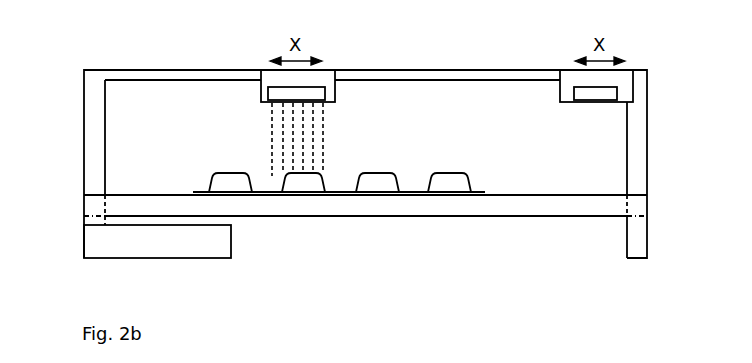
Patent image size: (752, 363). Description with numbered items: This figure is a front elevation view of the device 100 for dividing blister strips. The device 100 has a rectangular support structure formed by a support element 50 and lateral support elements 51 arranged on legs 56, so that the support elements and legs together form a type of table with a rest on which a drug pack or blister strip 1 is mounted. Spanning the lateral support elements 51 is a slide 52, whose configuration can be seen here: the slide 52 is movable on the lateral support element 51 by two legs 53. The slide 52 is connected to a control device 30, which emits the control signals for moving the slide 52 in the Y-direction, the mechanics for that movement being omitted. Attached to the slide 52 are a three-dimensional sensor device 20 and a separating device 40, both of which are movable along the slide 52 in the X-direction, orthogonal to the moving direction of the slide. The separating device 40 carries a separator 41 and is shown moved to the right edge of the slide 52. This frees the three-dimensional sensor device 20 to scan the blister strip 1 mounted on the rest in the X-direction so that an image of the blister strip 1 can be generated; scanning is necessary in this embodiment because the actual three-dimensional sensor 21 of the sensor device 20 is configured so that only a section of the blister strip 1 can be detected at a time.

The device 100 is at (78, 68).
The slide 52 is at (143, 78).
The legs 53 is at (95, 131).
The 3D-sensor device 20 is at (272, 79).
The 3D-sensor 21 is at (296, 96).
The separating device 40 is at (568, 79).
The separator 41 is at (597, 97).
The blister strip 1 is at (491, 170).
The support element 50 is at (448, 208).
The lateral support element 51 is at (95, 207).
The legs 56 is at (640, 250).
The control device 30 is at (157, 240).